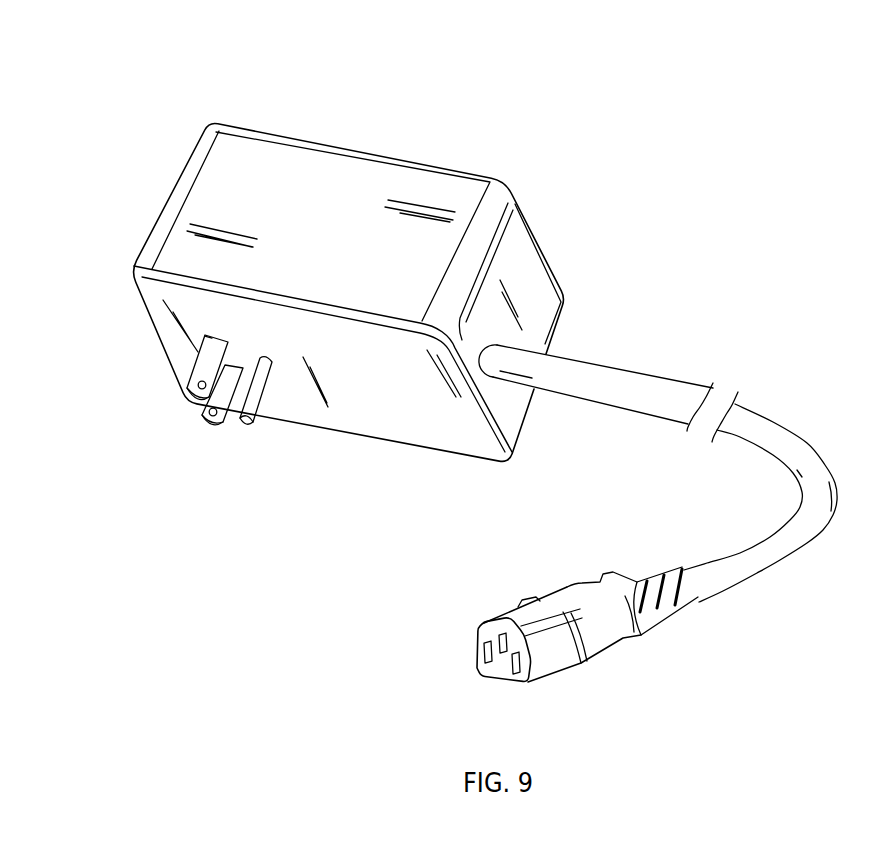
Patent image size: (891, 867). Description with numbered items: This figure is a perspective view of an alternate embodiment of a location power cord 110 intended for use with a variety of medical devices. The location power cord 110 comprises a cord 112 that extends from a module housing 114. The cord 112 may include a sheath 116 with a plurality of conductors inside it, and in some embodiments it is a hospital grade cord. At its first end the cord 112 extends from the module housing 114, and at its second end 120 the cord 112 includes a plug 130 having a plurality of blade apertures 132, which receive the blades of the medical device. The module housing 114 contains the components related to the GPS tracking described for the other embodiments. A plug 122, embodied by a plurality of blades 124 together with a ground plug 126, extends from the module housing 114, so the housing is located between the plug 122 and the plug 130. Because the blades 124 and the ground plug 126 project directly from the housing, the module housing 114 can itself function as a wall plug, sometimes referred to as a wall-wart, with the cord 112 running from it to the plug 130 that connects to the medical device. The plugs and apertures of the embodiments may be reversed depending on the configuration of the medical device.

The location power cord 110 is at (632, 82).
The cord 112 is at (768, 402).
The module housing 114 is at (570, 246).
The sheath 116 is at (817, 463).
The second end 120 is at (710, 620).
The plug 122 is at (183, 413).
The blades 124 is at (213, 337).
The ground plug 126 is at (254, 394).
The plug 130 is at (598, 673).
The blade apertures 132 is at (514, 668).